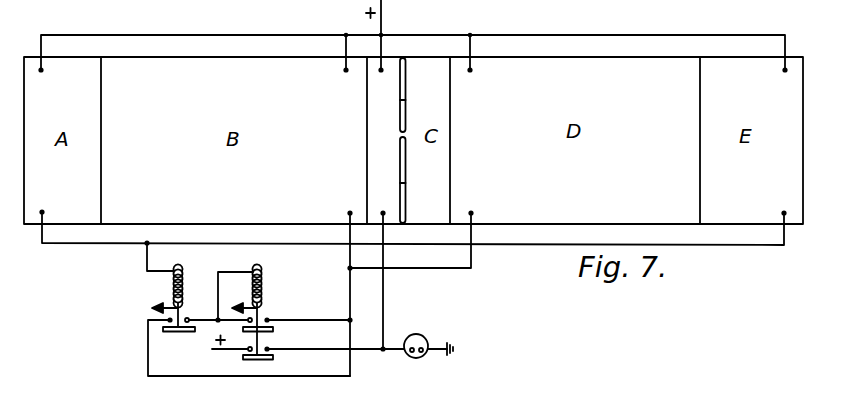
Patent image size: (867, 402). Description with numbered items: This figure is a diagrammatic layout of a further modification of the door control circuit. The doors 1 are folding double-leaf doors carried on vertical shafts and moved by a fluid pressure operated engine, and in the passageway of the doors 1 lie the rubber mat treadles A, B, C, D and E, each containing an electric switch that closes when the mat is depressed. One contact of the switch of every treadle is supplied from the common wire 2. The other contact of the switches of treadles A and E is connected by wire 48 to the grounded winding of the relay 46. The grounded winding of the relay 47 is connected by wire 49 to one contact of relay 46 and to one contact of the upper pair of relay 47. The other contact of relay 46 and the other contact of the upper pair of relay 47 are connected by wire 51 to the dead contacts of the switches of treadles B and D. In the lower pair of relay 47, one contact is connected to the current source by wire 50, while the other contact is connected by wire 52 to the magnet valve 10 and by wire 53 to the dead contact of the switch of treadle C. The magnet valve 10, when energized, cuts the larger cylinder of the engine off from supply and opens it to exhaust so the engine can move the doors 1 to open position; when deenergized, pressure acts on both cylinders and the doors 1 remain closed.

The door 1 is at (407, 113).
The common wire 2 is at (384, 15).
The magnet valve 10 is at (427, 338).
The relay 46 is at (180, 287).
The relay 47 is at (264, 311).
The wire 48 is at (101, 245).
The wire 49 is at (243, 265).
The wire 50 is at (237, 346).
The wire 51 is at (296, 378).
The wire 52 is at (371, 352).
The wire 53 is at (384, 305).